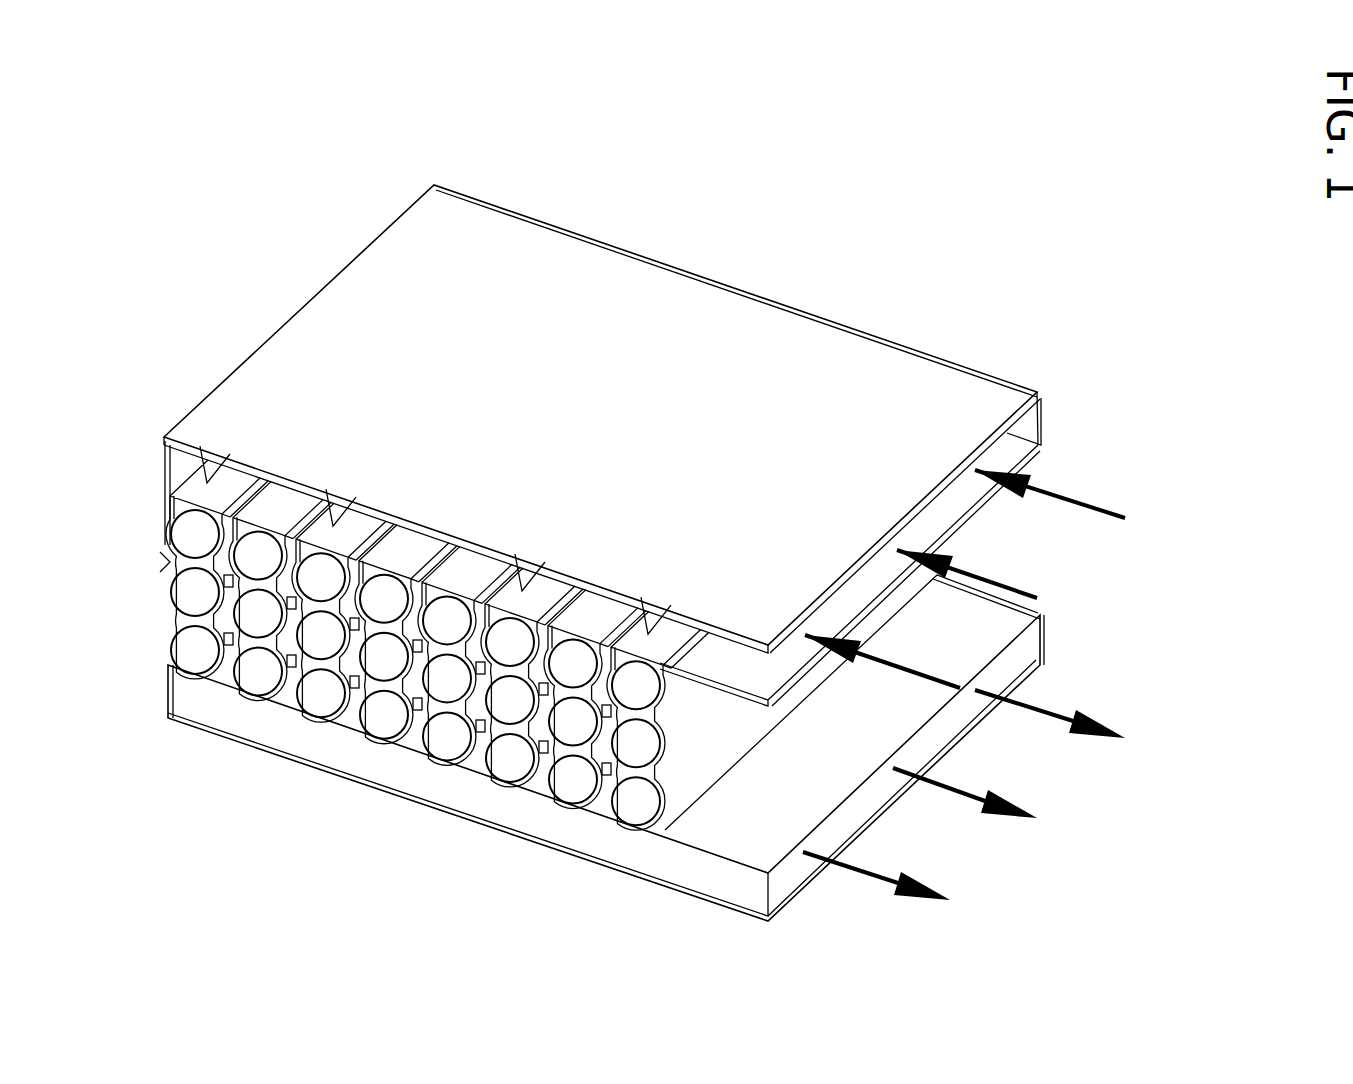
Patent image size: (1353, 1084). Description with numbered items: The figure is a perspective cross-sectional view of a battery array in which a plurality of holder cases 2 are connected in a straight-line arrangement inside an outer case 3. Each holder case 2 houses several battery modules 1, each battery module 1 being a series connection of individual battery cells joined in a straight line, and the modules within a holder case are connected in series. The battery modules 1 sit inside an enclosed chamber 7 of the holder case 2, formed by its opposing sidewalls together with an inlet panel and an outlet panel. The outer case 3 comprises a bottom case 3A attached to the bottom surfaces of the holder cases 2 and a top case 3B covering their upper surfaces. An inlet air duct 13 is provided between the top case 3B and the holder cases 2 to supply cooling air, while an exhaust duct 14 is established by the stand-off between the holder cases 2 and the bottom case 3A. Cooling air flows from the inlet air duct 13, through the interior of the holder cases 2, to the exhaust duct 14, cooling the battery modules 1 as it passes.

The battery module 1 is at (190, 532).
The holder case 2 is at (208, 480).
The outer case 3 is at (1198, 548).
The bottom case 3A is at (940, 742).
The top case 3B is at (870, 483).
The enclosed chamber 7 is at (167, 562).
The inlet air duct 13 is at (996, 450).
The exhaust duct 14 is at (823, 832).